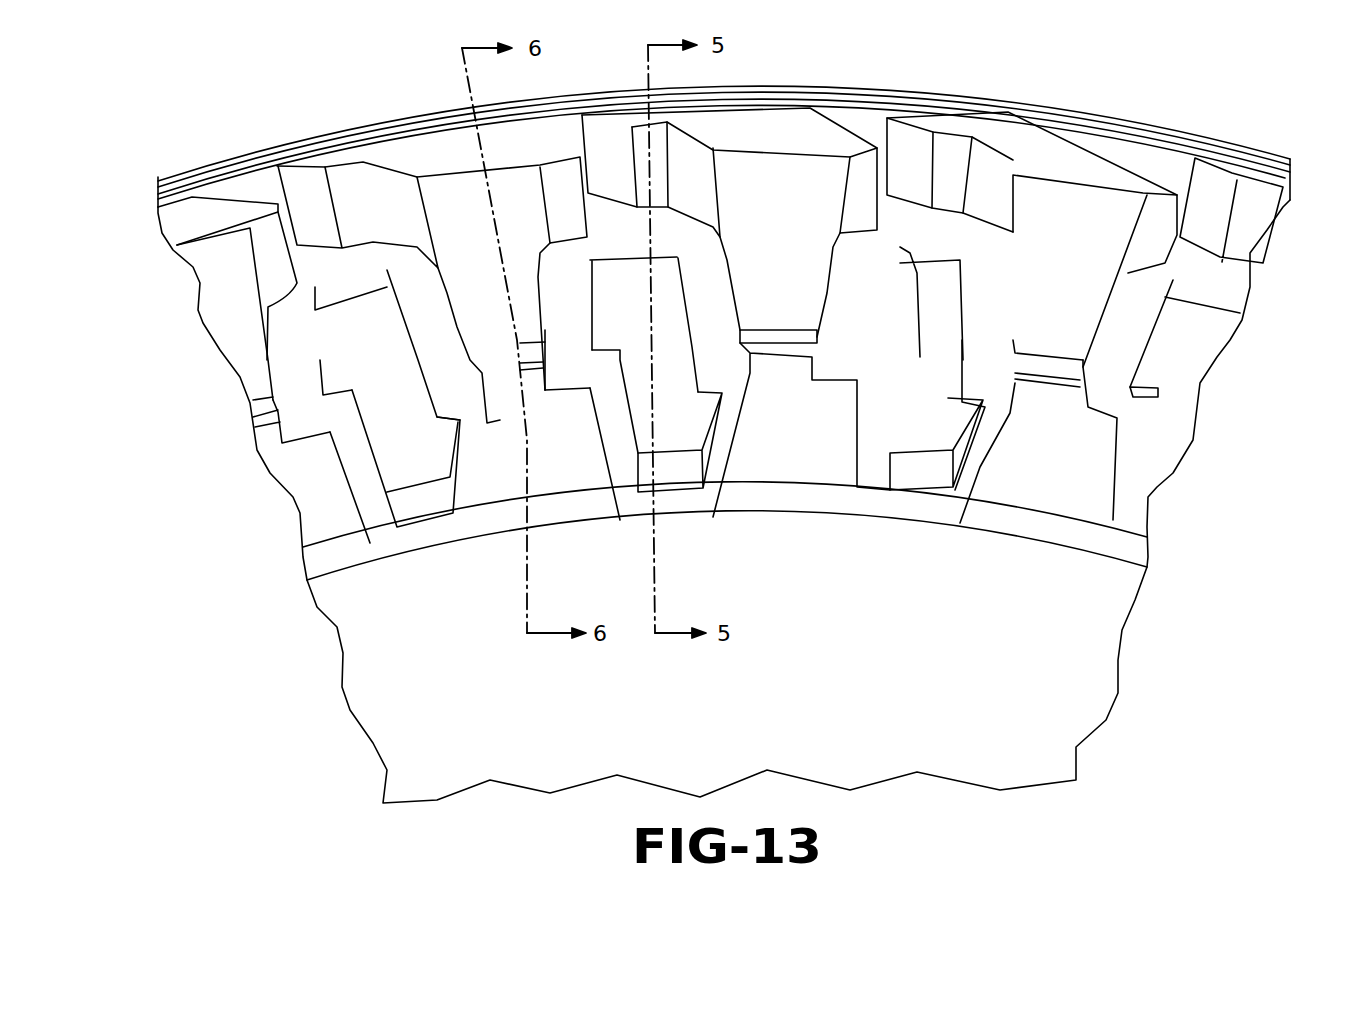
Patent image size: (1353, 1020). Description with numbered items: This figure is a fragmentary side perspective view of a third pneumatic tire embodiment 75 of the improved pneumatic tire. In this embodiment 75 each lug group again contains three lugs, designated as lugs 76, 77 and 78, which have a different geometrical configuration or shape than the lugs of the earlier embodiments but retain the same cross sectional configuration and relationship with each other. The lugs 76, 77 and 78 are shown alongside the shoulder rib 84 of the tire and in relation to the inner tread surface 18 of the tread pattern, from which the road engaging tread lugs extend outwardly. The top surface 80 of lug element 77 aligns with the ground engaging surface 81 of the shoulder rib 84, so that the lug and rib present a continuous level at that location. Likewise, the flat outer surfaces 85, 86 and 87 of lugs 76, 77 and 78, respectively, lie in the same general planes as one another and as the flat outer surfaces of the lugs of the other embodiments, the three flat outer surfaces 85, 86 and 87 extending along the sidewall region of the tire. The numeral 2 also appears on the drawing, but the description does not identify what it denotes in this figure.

The core 2 is at (370, 670).
The inner tread surface 18 is at (325, 263).
The third pneumatic tire embodiment 75 is at (863, 76).
The lug 76 is at (375, 468).
The lug element 77 is at (447, 195).
The lug 78 is at (292, 502).
The top surface 80 is at (1113, 180).
The ground engaging surface 81 is at (1047, 148).
The shoulder rib 84 is at (155, 217).
The flat outer surface 85 is at (345, 358).
The flat outer surface 86 is at (228, 287).
The flat outer surface 87 is at (313, 520).